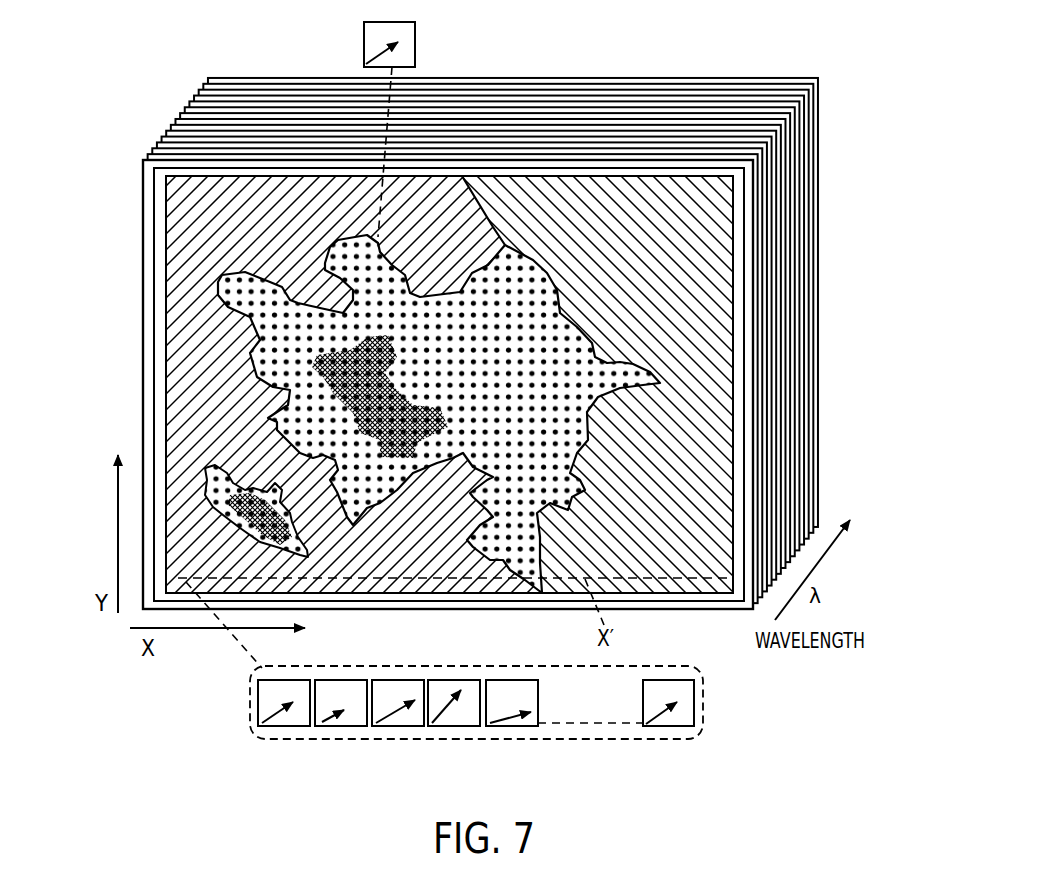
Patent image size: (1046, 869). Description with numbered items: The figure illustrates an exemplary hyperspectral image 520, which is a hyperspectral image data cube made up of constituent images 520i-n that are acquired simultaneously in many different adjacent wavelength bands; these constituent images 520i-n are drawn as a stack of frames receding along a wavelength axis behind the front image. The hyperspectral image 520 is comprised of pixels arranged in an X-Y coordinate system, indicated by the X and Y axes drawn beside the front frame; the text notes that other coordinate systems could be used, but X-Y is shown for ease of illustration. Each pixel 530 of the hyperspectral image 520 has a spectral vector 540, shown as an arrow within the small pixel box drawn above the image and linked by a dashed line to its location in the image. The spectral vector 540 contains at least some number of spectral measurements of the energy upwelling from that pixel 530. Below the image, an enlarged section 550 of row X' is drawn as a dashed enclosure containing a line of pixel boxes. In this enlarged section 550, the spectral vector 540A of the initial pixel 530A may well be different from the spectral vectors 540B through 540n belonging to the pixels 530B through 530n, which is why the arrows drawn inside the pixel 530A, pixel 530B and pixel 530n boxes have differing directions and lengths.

The hyperspectral image 520 is at (212, 262).
The constituent images 520i-n is at (192, 73).
The pixel 530 is at (415, 31).
The spectral vector 540 is at (364, 55).
The initial pixel 530A is at (278, 727).
The spectral vector of initial pixel 540A is at (262, 720).
The pixel 530B is at (350, 727).
The spectral vector 540B is at (323, 726).
The pixel 530n is at (694, 712).
The spectral vector 540n is at (653, 722).
The enlarged section 550 is at (500, 740).